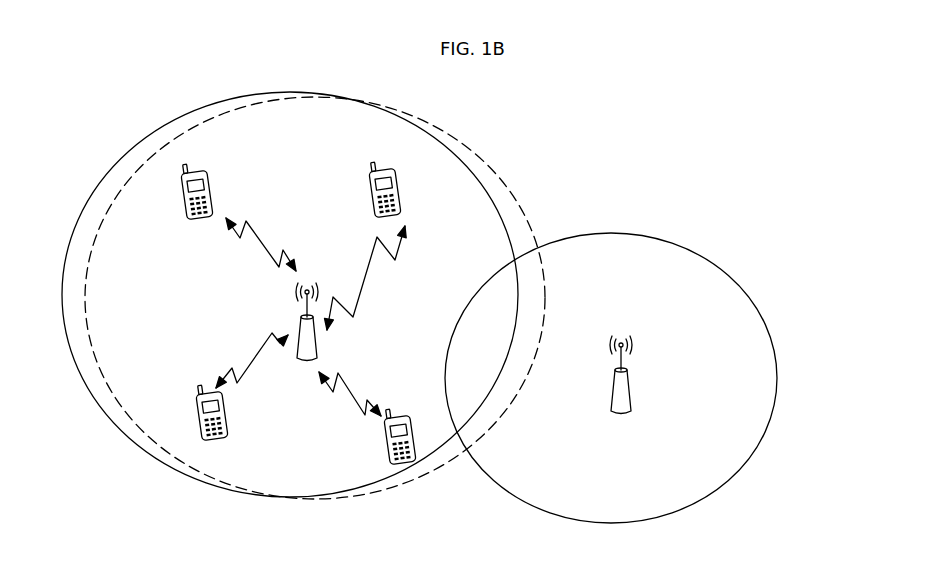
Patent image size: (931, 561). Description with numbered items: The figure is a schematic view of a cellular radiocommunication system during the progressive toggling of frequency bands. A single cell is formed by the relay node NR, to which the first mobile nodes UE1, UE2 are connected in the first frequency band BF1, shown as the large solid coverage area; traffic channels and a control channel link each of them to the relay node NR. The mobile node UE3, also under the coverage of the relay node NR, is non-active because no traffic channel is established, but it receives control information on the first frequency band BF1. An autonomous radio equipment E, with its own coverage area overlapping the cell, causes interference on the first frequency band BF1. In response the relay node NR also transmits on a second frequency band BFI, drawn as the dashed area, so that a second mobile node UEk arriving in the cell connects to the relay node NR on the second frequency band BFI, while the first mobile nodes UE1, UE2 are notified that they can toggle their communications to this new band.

The first frequency band BF1 is at (167, 466).
The second frequency band BFI is at (368, 493).
The first mobile node UE1 is at (241, 187).
The first mobile node UE2 is at (197, 413).
The mobile node UE3 is at (440, 425).
The second mobile node UEk is at (427, 199).
The relay node NR is at (319, 350).
The autonomous radio equipment E is at (610, 396).